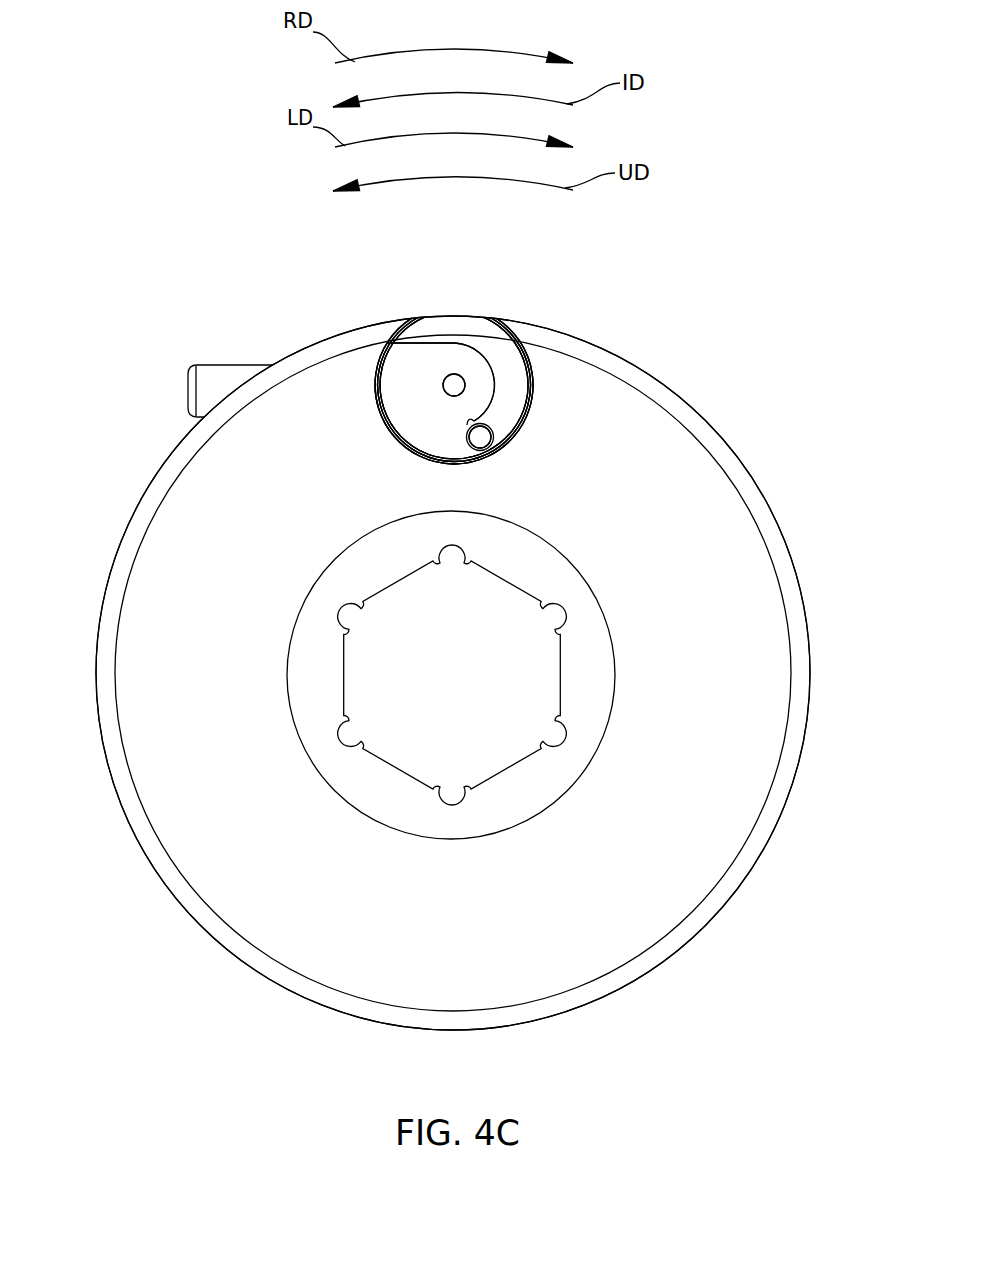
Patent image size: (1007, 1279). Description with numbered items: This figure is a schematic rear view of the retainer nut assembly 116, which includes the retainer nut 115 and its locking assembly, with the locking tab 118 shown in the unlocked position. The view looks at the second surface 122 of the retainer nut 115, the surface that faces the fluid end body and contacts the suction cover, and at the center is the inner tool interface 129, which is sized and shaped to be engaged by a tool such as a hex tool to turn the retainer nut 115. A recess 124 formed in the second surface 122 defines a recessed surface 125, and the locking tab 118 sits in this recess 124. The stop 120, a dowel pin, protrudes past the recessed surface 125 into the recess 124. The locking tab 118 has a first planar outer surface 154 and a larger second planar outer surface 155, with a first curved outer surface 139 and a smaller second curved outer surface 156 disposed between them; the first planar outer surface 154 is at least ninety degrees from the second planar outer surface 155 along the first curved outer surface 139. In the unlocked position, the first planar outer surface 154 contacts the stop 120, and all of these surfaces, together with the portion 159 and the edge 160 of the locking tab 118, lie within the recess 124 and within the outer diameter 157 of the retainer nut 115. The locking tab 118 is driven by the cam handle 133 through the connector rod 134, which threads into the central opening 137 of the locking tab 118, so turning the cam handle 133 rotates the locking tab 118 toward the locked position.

The retainer nut 115 is at (283, 988).
The retainer nut assembly 116 is at (162, 250).
The locking tab 118 is at (397, 412).
The stop 120 is at (493, 440).
The second surface 122 is at (157, 778).
The recess 124 is at (511, 398).
The recessed surface 125 is at (516, 333).
The inner tool interface 129 is at (383, 782).
The cam handle 133 is at (214, 370).
The connector rod 134 is at (452, 374).
The central opening 137 is at (443, 387).
The first curved outer surface 139 is at (387, 433).
The first planar outer surface 154 is at (411, 453).
The second planar outer surface 155 is at (428, 343).
The second curved outer surface 156 is at (497, 378).
The outer diameter 157 is at (483, 335).
The portion 159 is at (463, 453).
The edge 160 is at (486, 452).